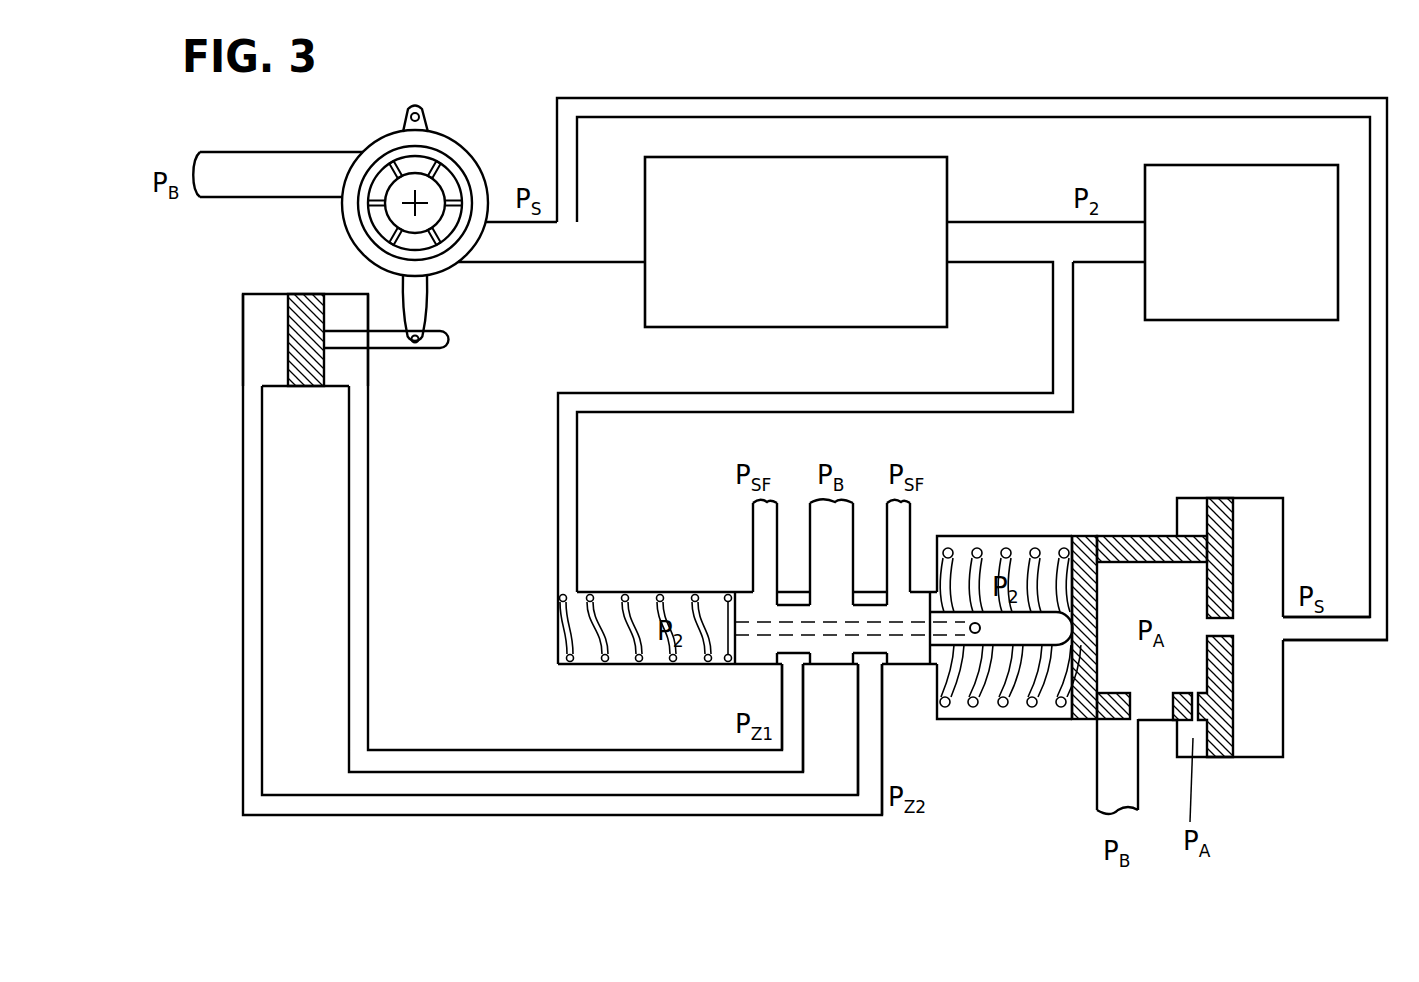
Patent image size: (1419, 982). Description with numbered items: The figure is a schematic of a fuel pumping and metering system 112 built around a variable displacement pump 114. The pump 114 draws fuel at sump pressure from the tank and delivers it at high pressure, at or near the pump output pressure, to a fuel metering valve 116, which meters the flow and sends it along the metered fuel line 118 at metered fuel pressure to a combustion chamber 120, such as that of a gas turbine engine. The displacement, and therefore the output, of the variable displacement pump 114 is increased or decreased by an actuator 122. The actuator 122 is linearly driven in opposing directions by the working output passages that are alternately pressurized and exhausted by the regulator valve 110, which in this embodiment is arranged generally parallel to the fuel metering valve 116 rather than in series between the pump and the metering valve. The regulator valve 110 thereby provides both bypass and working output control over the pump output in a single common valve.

The regulator valve 110 is at (996, 770).
The fuel pumping and metering system 112 is at (716, 46).
The variable displacement pump 114 is at (452, 145).
The fuel metering valve 116 is at (706, 196).
The fuel line 118 is at (1012, 230).
The combustion chamber 120 is at (1206, 205).
The actuator 122 is at (290, 343).